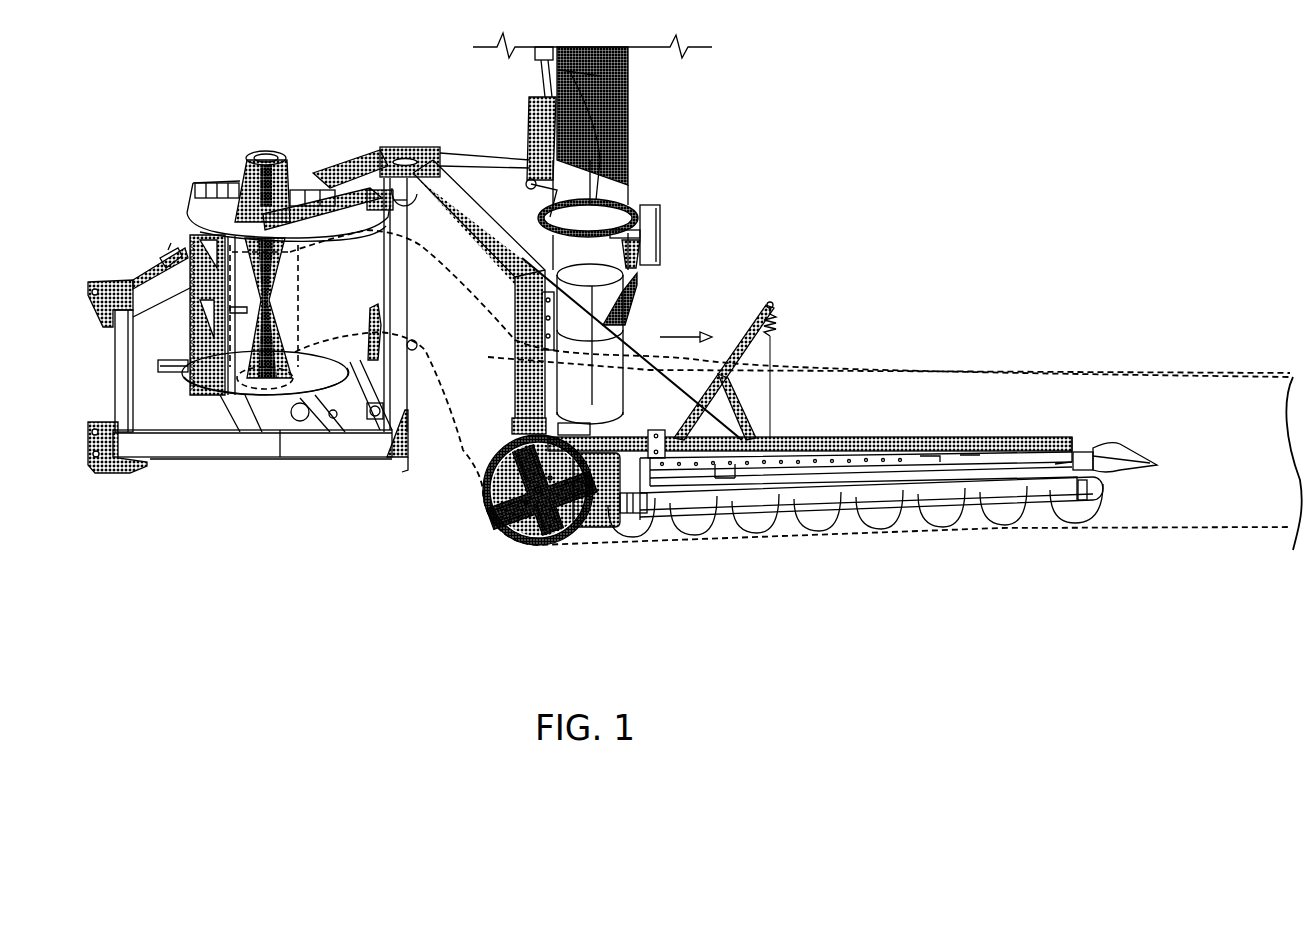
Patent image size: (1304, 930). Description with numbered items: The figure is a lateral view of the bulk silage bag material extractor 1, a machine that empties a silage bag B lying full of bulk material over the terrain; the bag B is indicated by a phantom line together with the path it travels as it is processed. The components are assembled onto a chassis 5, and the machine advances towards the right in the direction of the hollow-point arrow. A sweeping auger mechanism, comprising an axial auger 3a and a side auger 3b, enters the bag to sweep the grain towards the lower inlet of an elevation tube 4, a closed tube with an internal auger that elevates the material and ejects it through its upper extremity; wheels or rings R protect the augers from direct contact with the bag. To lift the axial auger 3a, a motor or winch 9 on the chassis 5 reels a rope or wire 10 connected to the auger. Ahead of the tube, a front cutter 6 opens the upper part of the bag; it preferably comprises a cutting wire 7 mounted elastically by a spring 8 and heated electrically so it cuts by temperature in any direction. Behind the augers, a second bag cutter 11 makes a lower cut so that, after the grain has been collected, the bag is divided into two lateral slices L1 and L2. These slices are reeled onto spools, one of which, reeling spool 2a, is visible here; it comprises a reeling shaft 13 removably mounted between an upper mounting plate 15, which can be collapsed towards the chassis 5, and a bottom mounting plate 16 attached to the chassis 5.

The bulk silage bag material extractor 1 is at (184, 128).
The reeling spool 2a is at (180, 170).
The axial auger 3a is at (820, 520).
The side auger 3b is at (530, 527).
The elevation tube 4 is at (640, 133).
The chassis 5 is at (340, 450).
The front cutter 6 is at (748, 322).
The cutting wire 7 is at (772, 357).
The spring 8 is at (776, 333).
The motor or winch 9 is at (402, 152).
The rope or wire 10 is at (640, 352).
The second bag cutter 11 is at (375, 309).
The reeling shaft 13 is at (253, 300).
The upper mounting plate 15 is at (200, 216).
The bottom mounting plate 16 is at (205, 383).
The bag B is at (942, 368).
The first bag slice L1 is at (333, 416).
The second bag slice L2 is at (415, 185).
The wheels or rings R is at (485, 482).